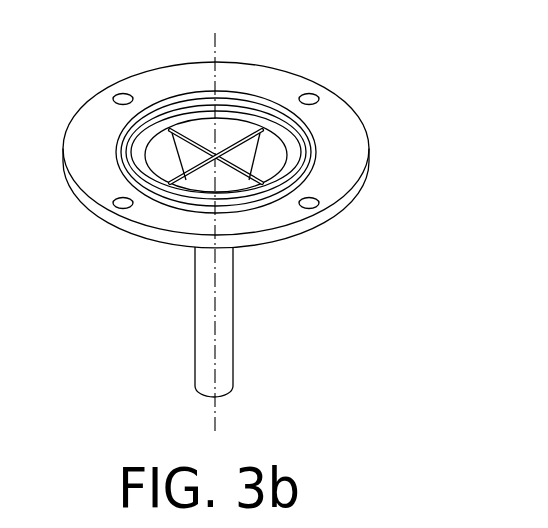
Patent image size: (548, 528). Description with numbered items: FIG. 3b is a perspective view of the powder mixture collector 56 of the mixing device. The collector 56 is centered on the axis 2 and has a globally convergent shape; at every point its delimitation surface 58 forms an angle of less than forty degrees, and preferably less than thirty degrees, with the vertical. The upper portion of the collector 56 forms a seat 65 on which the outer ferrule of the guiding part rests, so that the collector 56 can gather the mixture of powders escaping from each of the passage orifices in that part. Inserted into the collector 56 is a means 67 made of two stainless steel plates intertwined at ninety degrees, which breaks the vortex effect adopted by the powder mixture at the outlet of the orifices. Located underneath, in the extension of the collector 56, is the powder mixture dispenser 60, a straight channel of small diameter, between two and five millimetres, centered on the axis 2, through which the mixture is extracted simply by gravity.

The axis 2 is at (216, 424).
The powder mixture collector 56 is at (340, 76).
The delimitation surface 58 is at (225, 140).
The powder mixture dispenser 60 is at (228, 365).
The seat 65 is at (187, 118).
The means for breaking the vortex effect 67 is at (236, 184).